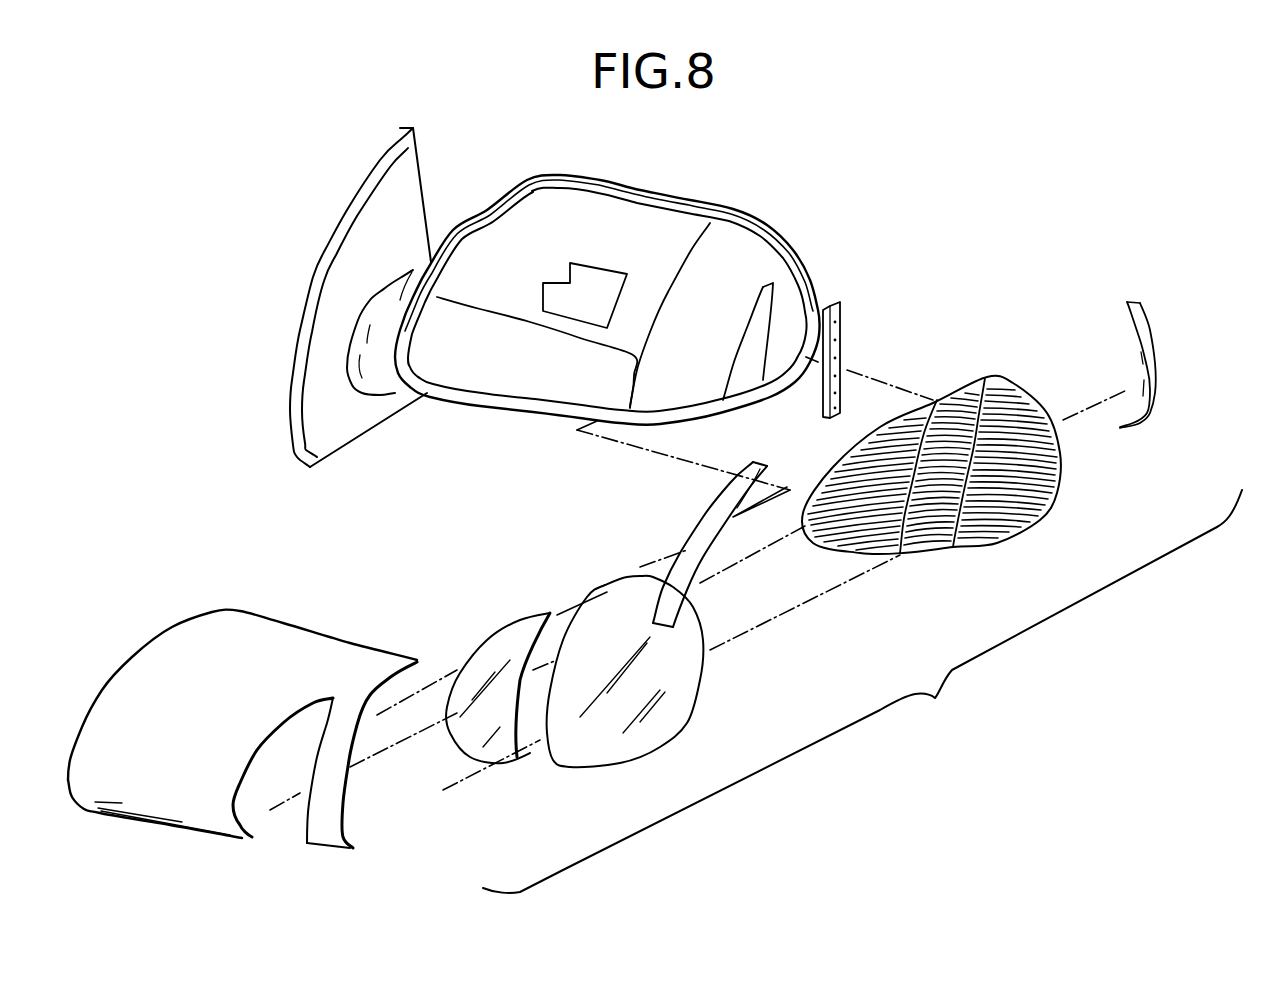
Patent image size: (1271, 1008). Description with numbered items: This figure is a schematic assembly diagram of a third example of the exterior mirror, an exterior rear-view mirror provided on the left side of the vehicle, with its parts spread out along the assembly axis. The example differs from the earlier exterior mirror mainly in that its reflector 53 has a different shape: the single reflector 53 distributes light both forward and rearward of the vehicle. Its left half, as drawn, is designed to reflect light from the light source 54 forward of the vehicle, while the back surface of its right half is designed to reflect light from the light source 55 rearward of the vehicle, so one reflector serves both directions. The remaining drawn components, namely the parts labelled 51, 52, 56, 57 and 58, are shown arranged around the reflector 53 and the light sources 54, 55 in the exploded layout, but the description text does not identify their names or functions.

The door mirror 51 is at (958, 729).
The mirror 52 is at (660, 733).
The reflector 53 is at (932, 525).
The light source 54 is at (687, 563).
The light source 55 is at (843, 347).
The mirror housing 56 is at (594, 180).
The housing cover 57 is at (147, 795).
The garnish 58 is at (1137, 417).